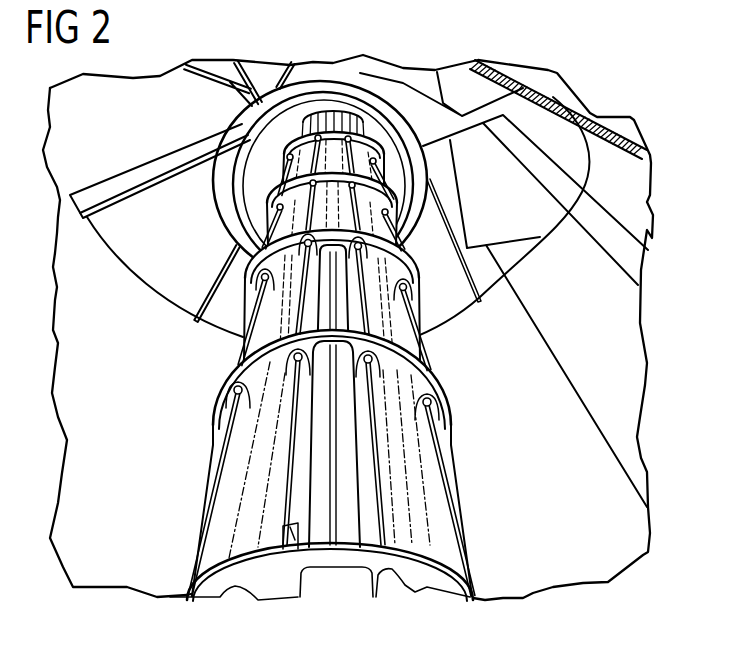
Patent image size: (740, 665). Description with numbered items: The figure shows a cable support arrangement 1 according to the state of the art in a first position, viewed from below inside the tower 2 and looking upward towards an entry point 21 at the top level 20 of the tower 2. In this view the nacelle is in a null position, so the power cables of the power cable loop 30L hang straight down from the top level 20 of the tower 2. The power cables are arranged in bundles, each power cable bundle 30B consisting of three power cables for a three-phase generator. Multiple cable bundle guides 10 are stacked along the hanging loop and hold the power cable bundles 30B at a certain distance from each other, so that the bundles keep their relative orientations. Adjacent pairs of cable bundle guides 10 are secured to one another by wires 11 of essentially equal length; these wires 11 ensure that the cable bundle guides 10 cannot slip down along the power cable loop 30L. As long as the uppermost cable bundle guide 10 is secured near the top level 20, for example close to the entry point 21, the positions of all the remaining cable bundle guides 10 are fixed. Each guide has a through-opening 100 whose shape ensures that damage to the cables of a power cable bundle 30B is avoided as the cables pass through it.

The cable support arrangement 1 is at (660, 324).
The tower 2 is at (80, 463).
The cable bundle guide 10 is at (231, 583).
The wire 11 is at (453, 498).
The top level 20 is at (152, 265).
The entry point 21 is at (251, 118).
The power cable loop 30L is at (268, 319).
The power cable bundle 30B is at (444, 547).
The through-opening 100 is at (361, 571).